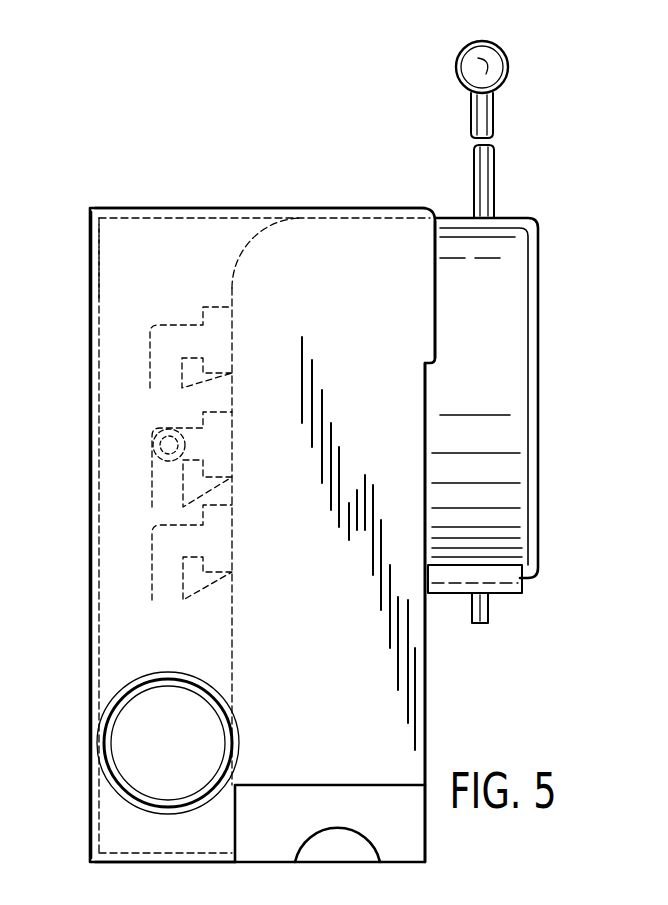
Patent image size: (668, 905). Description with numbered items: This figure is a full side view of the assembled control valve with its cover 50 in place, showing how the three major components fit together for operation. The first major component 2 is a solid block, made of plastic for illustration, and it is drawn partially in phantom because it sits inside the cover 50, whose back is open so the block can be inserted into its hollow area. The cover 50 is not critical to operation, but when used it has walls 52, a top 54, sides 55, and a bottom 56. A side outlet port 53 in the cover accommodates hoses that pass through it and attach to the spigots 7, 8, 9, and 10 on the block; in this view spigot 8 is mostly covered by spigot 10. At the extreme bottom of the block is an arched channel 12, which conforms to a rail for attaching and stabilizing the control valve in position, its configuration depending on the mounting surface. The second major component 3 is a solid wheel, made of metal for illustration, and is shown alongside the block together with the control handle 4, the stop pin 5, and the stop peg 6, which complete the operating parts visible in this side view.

The major component 2 is at (347, 232).
The second major component 3 is at (552, 221).
The control handle 4 is at (492, 115).
The stop pin 5 is at (500, 580).
The stop peg 6 is at (485, 610).
The spigot 7 is at (150, 351).
The spigot 8 is at (152, 487).
The spigot 9 is at (152, 557).
The spigot 10 is at (152, 436).
The arched channel 12 is at (342, 830).
The cover 50 is at (164, 198).
The walls 52 is at (92, 208).
The side outlet port 53 is at (125, 745).
The top 54 is at (252, 208).
The sides 55 is at (118, 273).
The bottom 56 is at (155, 865).